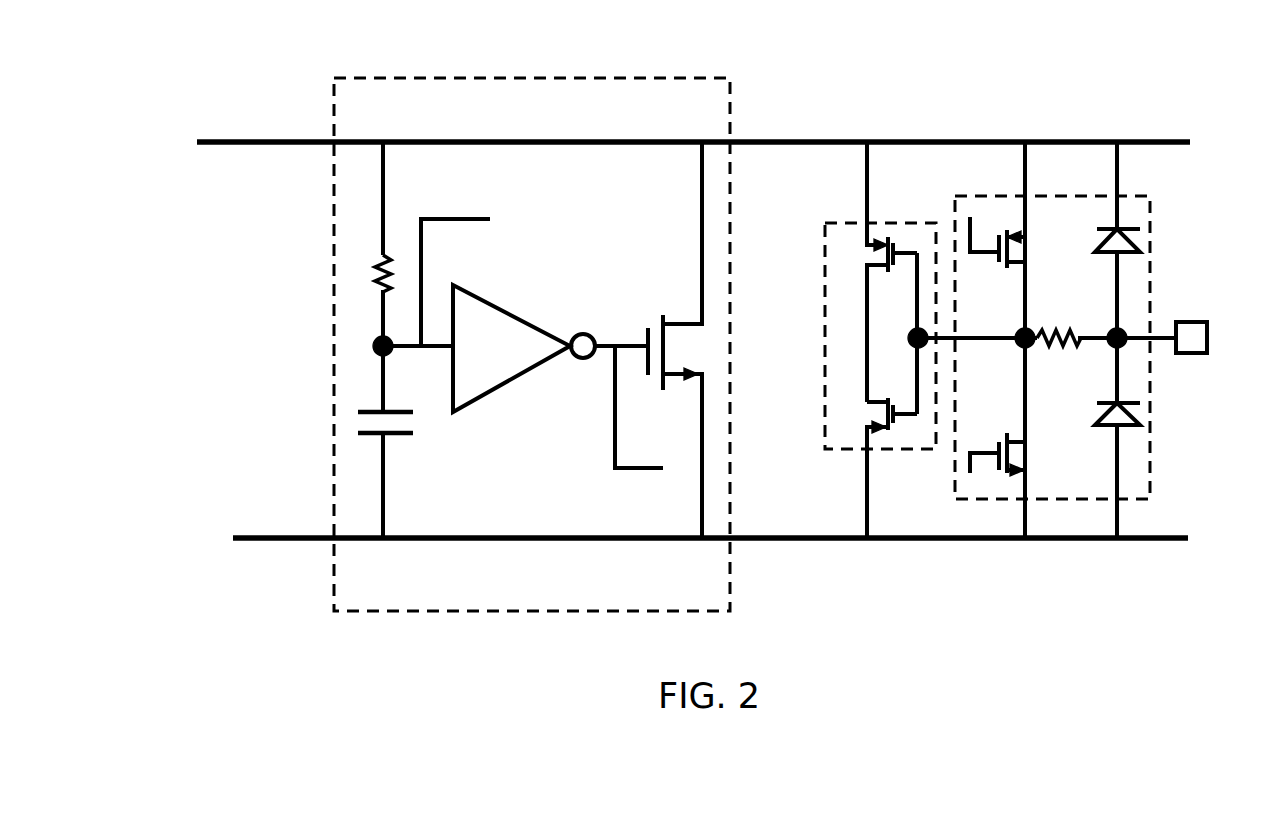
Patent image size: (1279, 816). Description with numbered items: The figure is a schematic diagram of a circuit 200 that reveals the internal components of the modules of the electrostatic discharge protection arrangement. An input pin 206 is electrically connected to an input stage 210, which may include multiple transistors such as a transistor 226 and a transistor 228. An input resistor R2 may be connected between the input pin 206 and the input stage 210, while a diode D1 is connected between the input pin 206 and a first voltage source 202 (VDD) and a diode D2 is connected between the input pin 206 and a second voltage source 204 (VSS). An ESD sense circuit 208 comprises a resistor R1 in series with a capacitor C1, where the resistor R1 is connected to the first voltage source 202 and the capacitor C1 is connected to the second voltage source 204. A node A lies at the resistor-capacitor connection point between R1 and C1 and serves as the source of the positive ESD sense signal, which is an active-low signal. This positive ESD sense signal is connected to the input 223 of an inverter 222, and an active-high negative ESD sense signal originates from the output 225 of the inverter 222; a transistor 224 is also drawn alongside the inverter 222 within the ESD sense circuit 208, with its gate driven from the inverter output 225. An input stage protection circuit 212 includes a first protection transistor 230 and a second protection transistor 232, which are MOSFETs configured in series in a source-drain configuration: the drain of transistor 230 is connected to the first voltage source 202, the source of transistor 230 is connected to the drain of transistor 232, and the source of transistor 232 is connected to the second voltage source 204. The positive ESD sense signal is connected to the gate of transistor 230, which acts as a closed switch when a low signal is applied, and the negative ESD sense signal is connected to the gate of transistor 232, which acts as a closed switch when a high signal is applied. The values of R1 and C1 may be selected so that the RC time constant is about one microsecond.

The circuit 200 is at (216, 98).
The first voltage source 202 is at (1085, 140).
The second voltage source 204 is at (1145, 540).
The input pin 206 is at (1190, 330).
The ESD sense circuit 208 is at (497, 78).
The input stage 210 is at (852, 455).
The input stage protection circuit 212 is at (1150, 485).
The inverter 222 is at (472, 370).
The input of inverter 223 is at (437, 343).
The NMOS transistor 224 is at (655, 315).
The output of inverter 225 is at (615, 345).
The transistor 226 is at (860, 252).
The transistor 228 is at (870, 415).
The first protection transistor 230 is at (1010, 245).
The second protection transistor 232 is at (1015, 455).
The resistor R1 is at (365, 272).
The capacitor C1 is at (355, 420).
The node A is at (372, 343).
The input resistor R2 is at (1045, 330).
The diode D1 is at (1140, 247).
The diode D2 is at (1140, 420).